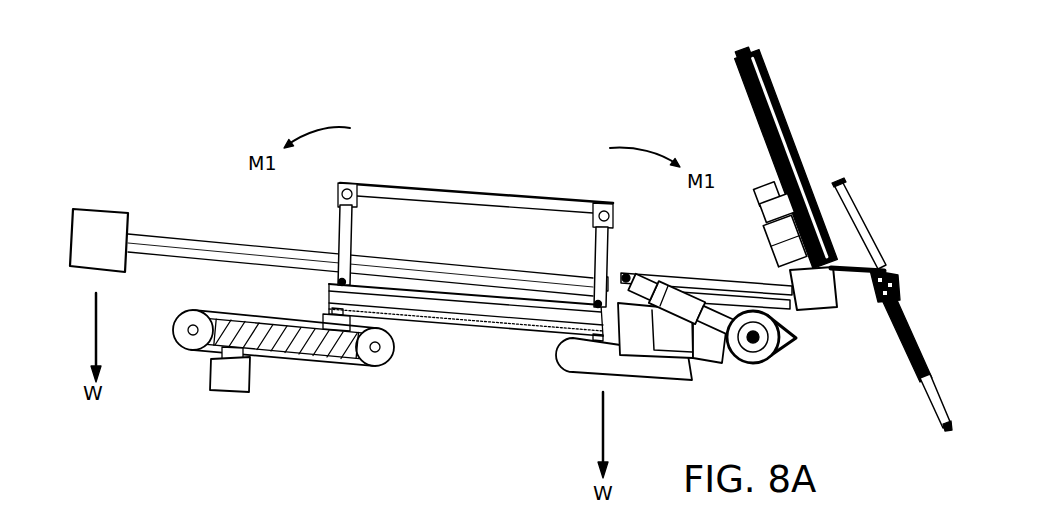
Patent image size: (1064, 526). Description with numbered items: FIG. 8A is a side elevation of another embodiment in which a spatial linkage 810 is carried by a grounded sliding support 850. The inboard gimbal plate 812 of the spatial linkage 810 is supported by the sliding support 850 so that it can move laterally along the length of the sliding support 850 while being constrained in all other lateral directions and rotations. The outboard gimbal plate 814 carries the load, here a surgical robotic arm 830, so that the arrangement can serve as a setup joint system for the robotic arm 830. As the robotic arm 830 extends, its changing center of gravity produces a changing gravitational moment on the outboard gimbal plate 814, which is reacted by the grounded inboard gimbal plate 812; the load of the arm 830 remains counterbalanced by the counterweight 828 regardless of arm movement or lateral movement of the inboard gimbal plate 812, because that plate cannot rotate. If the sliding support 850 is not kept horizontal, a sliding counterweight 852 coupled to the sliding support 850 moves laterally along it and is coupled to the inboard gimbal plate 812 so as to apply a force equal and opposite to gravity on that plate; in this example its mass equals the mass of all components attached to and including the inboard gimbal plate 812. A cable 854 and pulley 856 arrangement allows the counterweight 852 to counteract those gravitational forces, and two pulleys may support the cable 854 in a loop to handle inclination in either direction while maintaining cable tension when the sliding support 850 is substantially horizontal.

The spatial linkage 810 is at (405, 296).
The inboard gimbal plate 812 is at (352, 240).
The outboard gimbal plate 814 is at (610, 240).
The counterweight 828 is at (100, 208).
The surgical robotic arm 830 is at (797, 285).
The sliding support 850 is at (264, 354).
The sliding counterweight 852 is at (250, 378).
The cable 854 is at (262, 313).
The pulley 856 is at (175, 330).